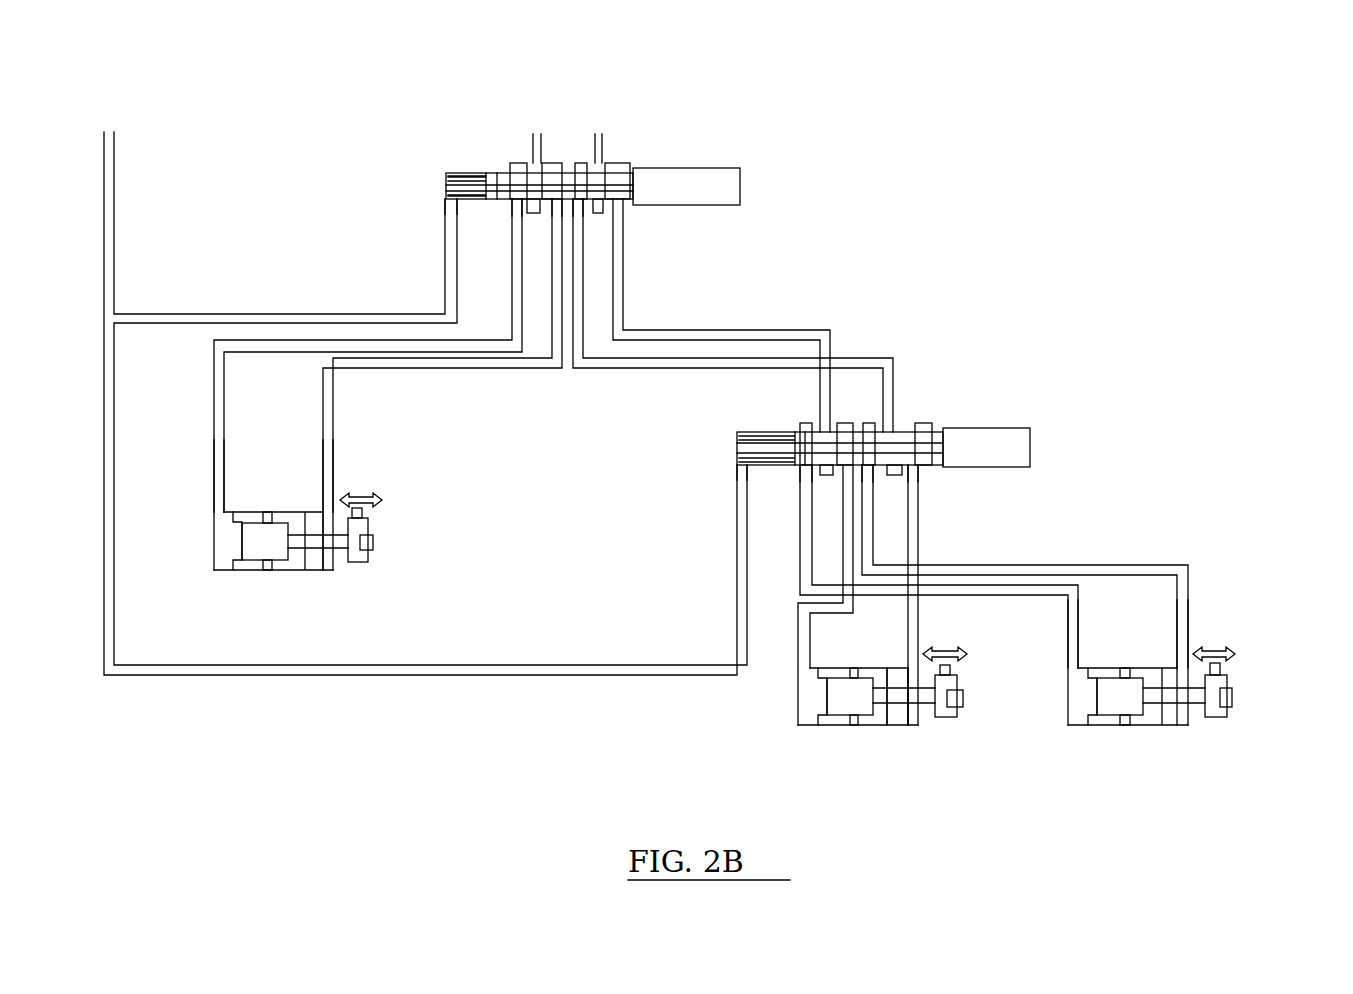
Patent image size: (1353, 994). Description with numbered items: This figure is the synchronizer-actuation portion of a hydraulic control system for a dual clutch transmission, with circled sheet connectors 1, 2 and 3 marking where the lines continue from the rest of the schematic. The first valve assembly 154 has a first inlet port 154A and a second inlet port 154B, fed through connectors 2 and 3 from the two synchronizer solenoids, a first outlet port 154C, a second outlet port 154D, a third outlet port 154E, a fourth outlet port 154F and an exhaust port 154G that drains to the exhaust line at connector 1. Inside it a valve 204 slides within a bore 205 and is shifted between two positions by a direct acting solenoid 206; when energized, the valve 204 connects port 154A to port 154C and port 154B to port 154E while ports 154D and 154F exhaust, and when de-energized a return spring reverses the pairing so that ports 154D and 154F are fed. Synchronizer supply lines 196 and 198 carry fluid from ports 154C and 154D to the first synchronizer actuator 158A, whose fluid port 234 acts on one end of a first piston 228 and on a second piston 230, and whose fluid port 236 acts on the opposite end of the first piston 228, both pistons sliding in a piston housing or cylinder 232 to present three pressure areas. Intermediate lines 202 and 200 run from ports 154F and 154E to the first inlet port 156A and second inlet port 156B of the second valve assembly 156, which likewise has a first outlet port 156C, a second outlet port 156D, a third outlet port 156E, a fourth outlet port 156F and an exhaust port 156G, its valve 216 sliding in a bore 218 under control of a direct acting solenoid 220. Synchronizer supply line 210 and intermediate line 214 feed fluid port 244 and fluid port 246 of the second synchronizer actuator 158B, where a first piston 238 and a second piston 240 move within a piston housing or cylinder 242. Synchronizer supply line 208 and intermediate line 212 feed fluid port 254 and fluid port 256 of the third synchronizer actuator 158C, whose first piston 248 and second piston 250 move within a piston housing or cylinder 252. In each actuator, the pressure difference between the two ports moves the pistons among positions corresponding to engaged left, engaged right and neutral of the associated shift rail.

The pressure source 1 is at (421, 389).
The control signal input 2 is at (537, 134).
The control signal input 3 is at (598, 134).
The first valve assembly 154 is at (715, 146).
The first inlet port 154A is at (522, 166).
The second inlet port 154B is at (603, 166).
The first outlet port 154C is at (515, 212).
The second outlet port 154D is at (580, 212).
The third outlet port 154E is at (560, 212).
The fourth outlet port 154F is at (628, 205).
The exhaust port 154G is at (448, 203).
The second valve assembly 156 is at (988, 388).
The first inlet port 156A is at (829, 430).
The second inlet port 156B is at (890, 425).
The first outlet port 156C is at (806, 480).
The second outlet port 156D is at (880, 480).
The third outlet port 156E is at (868, 480).
The fourth outlet port 156F is at (922, 472).
The exhaust port 156G is at (740, 470).
The first synchronizer actuator 158A is at (392, 496).
The second synchronizer actuator 158B is at (952, 716).
The third synchronizer actuator 158C is at (1238, 640).
The synchronizer supply line 196 is at (282, 340).
The synchronizer supply line 198 is at (458, 372).
The intermediate line 200 is at (612, 370).
The intermediate line 202 is at (803, 328).
The valve 204 is at (470, 176).
The bore 205 is at (466, 168).
The direct acting solenoid 206 is at (741, 178).
The synchronizer supply line 208 is at (1068, 620).
The synchronizer supply line 210 is at (797, 608).
The intermediate line 212 is at (1192, 586).
The intermediate line 214 is at (920, 628).
The valve 216 is at (940, 436).
The bore 218 is at (895, 425).
The direct acting solenoid 220 is at (1032, 442).
The first piston 228 is at (263, 575).
The second piston 230 is at (232, 575).
The piston housing or cylinder 232 is at (325, 575).
The fluid port 234 is at (222, 492).
The fluid port 236 is at (323, 503).
The first piston 238 is at (846, 730).
The second piston 240 is at (805, 730).
The piston housing or cylinder 242 is at (910, 730).
The fluid port 244 is at (805, 665).
The fluid port 246 is at (906, 665).
The first piston 248 is at (1116, 730).
The second piston 250 is at (1072, 730).
The piston housing or cylinder 252 is at (1182, 730).
The fluid port 254 is at (1078, 635).
The fluid port 256 is at (1178, 662).